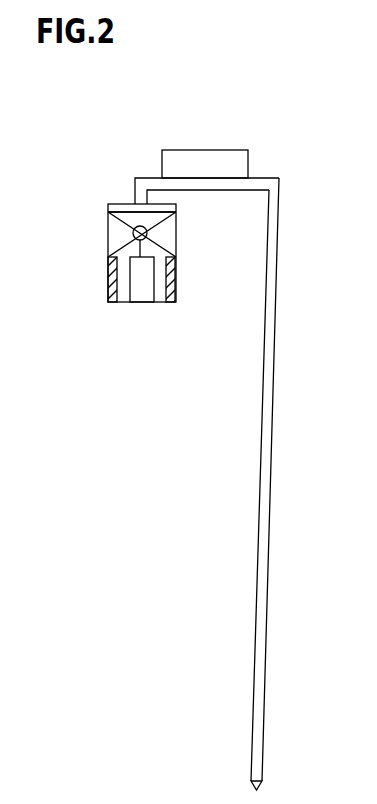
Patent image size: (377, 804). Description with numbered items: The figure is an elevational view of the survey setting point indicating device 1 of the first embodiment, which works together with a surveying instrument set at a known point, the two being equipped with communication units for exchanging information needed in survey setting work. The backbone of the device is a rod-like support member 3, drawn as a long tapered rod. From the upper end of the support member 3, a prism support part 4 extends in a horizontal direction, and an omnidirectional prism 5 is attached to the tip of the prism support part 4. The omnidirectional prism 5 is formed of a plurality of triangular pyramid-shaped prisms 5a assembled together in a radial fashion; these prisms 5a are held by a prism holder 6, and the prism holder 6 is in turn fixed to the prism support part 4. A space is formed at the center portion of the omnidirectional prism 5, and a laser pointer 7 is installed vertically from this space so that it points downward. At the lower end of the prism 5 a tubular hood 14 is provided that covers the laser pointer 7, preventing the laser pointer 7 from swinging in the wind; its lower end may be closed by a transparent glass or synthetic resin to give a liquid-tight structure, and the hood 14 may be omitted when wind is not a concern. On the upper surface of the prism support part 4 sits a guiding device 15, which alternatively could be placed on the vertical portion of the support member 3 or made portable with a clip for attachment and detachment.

The survey setting point indicating device 1 is at (243, 471).
The support member 3 is at (275, 370).
The prism support part 4 is at (206, 191).
The omnidirectional prism 5 is at (104, 268).
The triangular pyramid-shaped prism 5a is at (107, 222).
The prism holder 6 is at (118, 204).
The laser pointer 7 is at (147, 303).
The hood 14 is at (108, 289).
The guiding device 15 is at (208, 150).